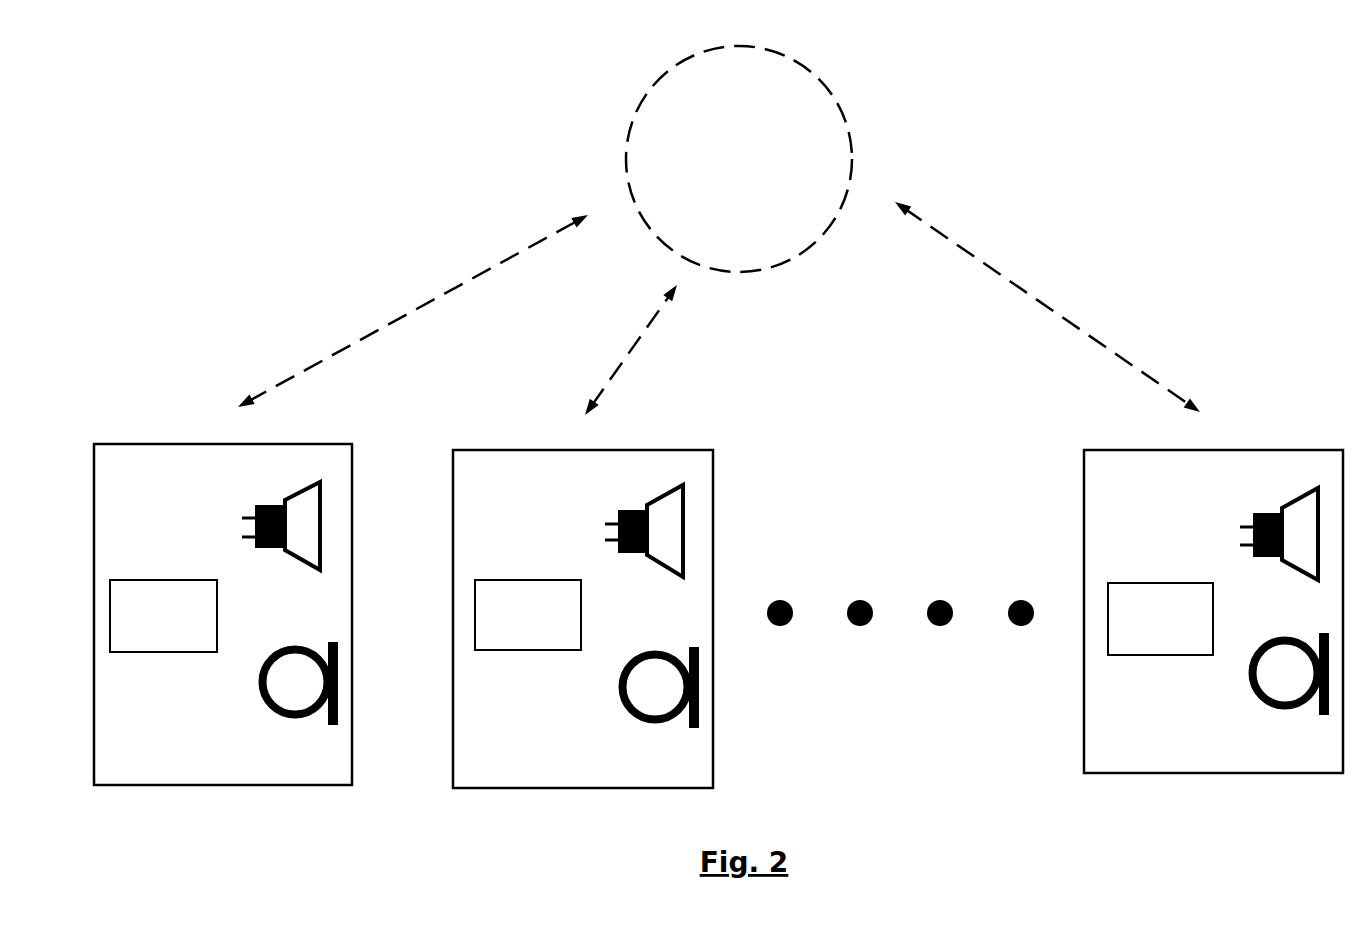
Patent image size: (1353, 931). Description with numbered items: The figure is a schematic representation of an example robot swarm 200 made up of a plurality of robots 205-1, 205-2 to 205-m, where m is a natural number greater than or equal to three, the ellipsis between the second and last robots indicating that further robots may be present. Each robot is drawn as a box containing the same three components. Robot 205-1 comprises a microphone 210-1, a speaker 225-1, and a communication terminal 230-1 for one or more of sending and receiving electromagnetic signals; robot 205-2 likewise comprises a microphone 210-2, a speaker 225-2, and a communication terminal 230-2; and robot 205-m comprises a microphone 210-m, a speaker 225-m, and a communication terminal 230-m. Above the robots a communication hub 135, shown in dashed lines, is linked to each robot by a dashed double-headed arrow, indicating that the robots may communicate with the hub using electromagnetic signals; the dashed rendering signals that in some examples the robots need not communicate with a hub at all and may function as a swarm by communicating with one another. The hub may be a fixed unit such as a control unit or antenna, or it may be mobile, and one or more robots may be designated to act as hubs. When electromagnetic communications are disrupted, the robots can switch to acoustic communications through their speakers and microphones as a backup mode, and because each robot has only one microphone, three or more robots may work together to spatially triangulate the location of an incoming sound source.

The swarm 200 is at (250, 100).
The communication hub 135 is at (739, 159).
The robot 205-1 is at (223, 635).
The robot 205-2 is at (583, 638).
The robot 205-m is at (1213, 633).
The microphone 210-1 is at (301, 697).
The microphone 210-2 is at (661, 702).
The microphone 210-m is at (1290, 688).
The speaker 225-1 is at (283, 543).
The speaker 225-2 is at (646, 547).
The speaker 225-m is at (1283, 550).
The communication terminal 230-1 is at (163, 616).
The communication terminal 230-2 is at (528, 615).
The communication terminal 230-m is at (1160, 619).